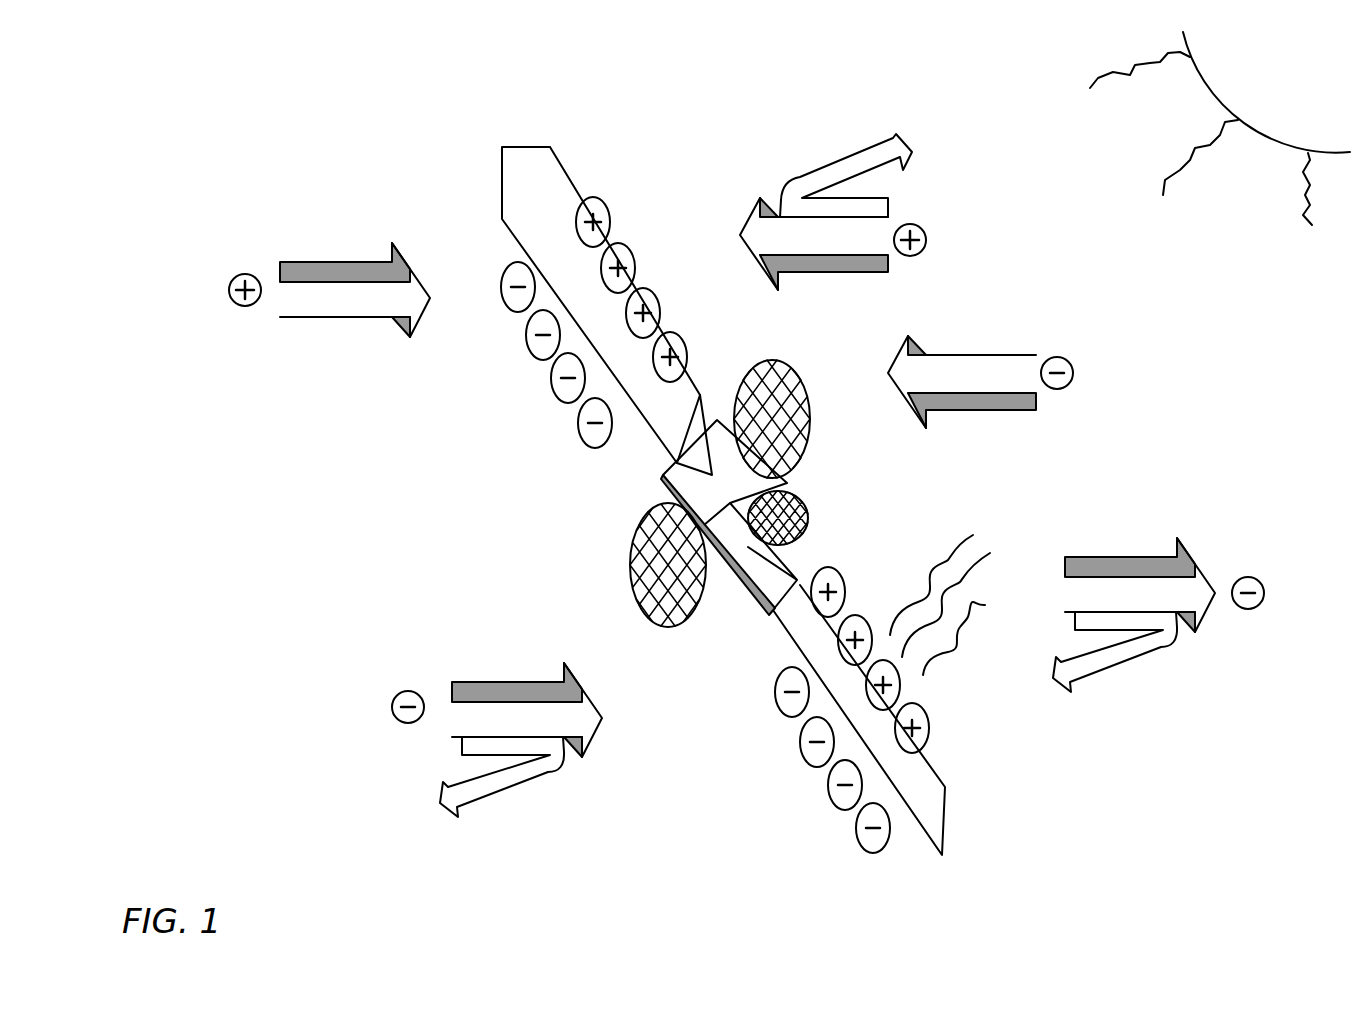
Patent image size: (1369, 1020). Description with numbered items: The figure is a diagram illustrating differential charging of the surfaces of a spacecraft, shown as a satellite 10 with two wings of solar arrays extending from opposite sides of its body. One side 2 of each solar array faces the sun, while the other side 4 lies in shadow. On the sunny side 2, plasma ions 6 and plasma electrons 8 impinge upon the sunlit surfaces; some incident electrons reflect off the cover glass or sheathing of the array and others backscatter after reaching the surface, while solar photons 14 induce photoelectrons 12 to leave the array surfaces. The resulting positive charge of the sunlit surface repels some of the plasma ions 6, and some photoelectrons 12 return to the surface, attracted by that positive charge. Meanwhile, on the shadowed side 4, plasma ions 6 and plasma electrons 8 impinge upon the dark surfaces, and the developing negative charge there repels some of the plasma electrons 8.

The sunny side of the solar array 2 is at (547, 198).
The shadowed side of the solar array 4 is at (751, 621).
The plasma ions 6 is at (364, 312).
The plasma electrons 8 is at (971, 386).
The satellite 10 is at (446, 181).
The photoelectrons 12 is at (1124, 607).
The solar photons 14 is at (948, 652).